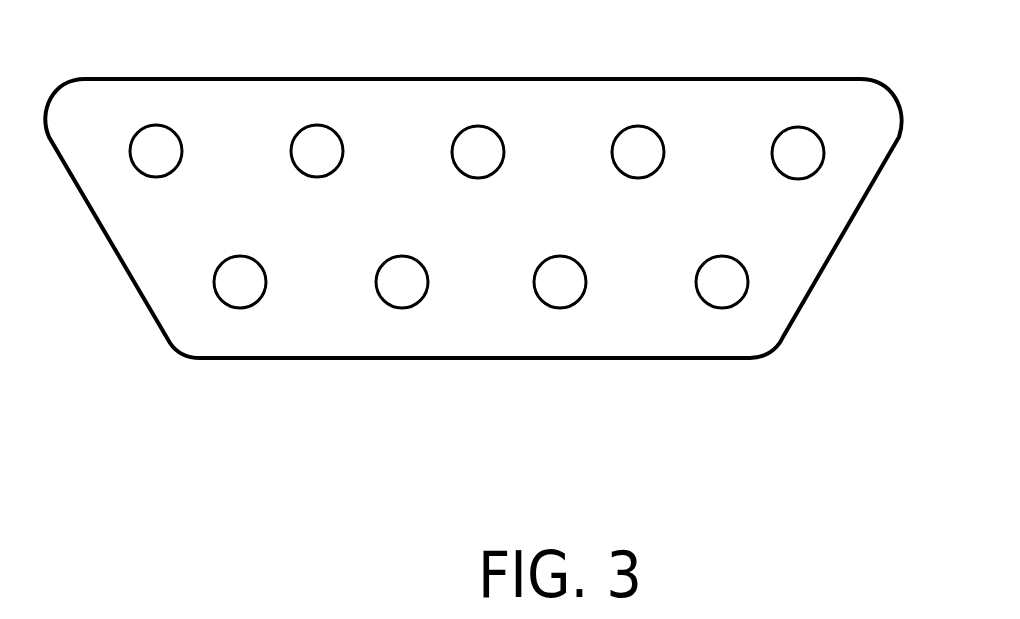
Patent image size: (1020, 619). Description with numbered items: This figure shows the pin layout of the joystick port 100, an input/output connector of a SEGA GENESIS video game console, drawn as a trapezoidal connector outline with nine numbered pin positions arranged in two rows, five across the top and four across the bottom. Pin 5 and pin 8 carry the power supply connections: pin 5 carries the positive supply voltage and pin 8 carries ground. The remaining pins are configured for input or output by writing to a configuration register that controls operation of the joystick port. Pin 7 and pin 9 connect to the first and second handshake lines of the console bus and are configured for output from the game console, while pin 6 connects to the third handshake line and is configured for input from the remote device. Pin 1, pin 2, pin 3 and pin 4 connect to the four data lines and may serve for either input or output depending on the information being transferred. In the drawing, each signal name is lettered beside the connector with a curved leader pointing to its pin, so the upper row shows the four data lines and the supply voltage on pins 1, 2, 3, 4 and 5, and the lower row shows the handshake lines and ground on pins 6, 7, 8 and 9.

The DB9 connector outline 100 is at (473, 218).
The pin 1 is at (68, 26).
The pin 2 is at (230, 26).
The pin 3 is at (392, 27).
The pin 4 is at (552, 27).
The pin 5 is at (713, 30).
The pin 6 is at (333, 410).
The pin 7 is at (497, 410).
The pin 8 is at (652, 412).
The pin 9 is at (815, 412).